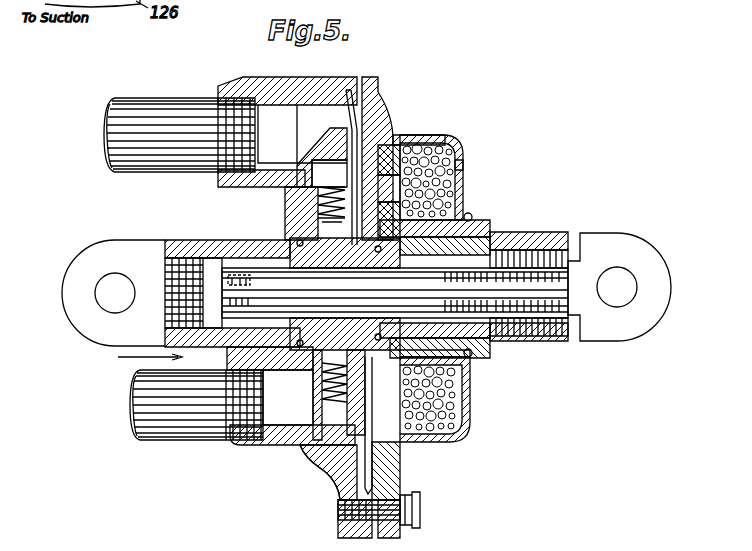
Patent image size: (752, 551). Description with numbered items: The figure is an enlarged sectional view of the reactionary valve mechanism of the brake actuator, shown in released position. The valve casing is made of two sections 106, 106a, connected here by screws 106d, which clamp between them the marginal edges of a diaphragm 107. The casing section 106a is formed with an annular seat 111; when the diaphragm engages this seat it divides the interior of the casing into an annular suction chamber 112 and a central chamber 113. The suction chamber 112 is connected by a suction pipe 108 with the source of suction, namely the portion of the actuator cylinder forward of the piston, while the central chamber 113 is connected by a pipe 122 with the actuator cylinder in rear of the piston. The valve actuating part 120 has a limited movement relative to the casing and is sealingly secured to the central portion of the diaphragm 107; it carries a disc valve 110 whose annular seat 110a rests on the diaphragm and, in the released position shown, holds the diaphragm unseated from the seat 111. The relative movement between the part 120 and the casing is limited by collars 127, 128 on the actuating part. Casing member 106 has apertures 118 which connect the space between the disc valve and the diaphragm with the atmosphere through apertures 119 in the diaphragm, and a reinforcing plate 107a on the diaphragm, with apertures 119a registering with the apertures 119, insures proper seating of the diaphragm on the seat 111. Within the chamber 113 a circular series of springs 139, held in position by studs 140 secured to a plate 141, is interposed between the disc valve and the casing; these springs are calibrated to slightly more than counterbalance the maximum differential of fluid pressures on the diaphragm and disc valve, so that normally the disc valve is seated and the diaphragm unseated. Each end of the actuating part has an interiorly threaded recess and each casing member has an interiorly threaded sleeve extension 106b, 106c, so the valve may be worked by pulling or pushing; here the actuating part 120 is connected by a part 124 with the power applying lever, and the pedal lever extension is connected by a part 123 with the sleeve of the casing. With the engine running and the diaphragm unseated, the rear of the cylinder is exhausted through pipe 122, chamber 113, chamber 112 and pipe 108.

The valve casing section 106 is at (388, 120).
The valve casing section 106a is at (296, 80).
The interiorly threaded sleeve extension 106b is at (181, 243).
The interiorly threaded sleeve extension 106c is at (540, 236).
The screws 106d is at (340, 520).
The diaphragm 107 is at (395, 134).
The reinforcing plate 107a is at (447, 148).
The suction pipe 108 is at (153, 91).
The disc valve 110 is at (440, 138).
The annular seat 110a is at (461, 166).
The annular seat 111 is at (343, 137).
The annular suction chamber 112 is at (314, 473).
The central chamber 113 is at (300, 160).
The apertures 118 is at (455, 188).
The apertures 119 is at (468, 416).
The apertures 119a is at (452, 368).
The valve actuating part 120 is at (255, 272).
The pipe 122 is at (178, 438).
The connecting part 123 is at (106, 343).
The connecting part 124 is at (658, 278).
The collar 127 is at (306, 370).
The collar 128 is at (466, 216).
The springs 139 is at (318, 196).
The studs 140 is at (320, 210).
The plate 141 is at (327, 402).